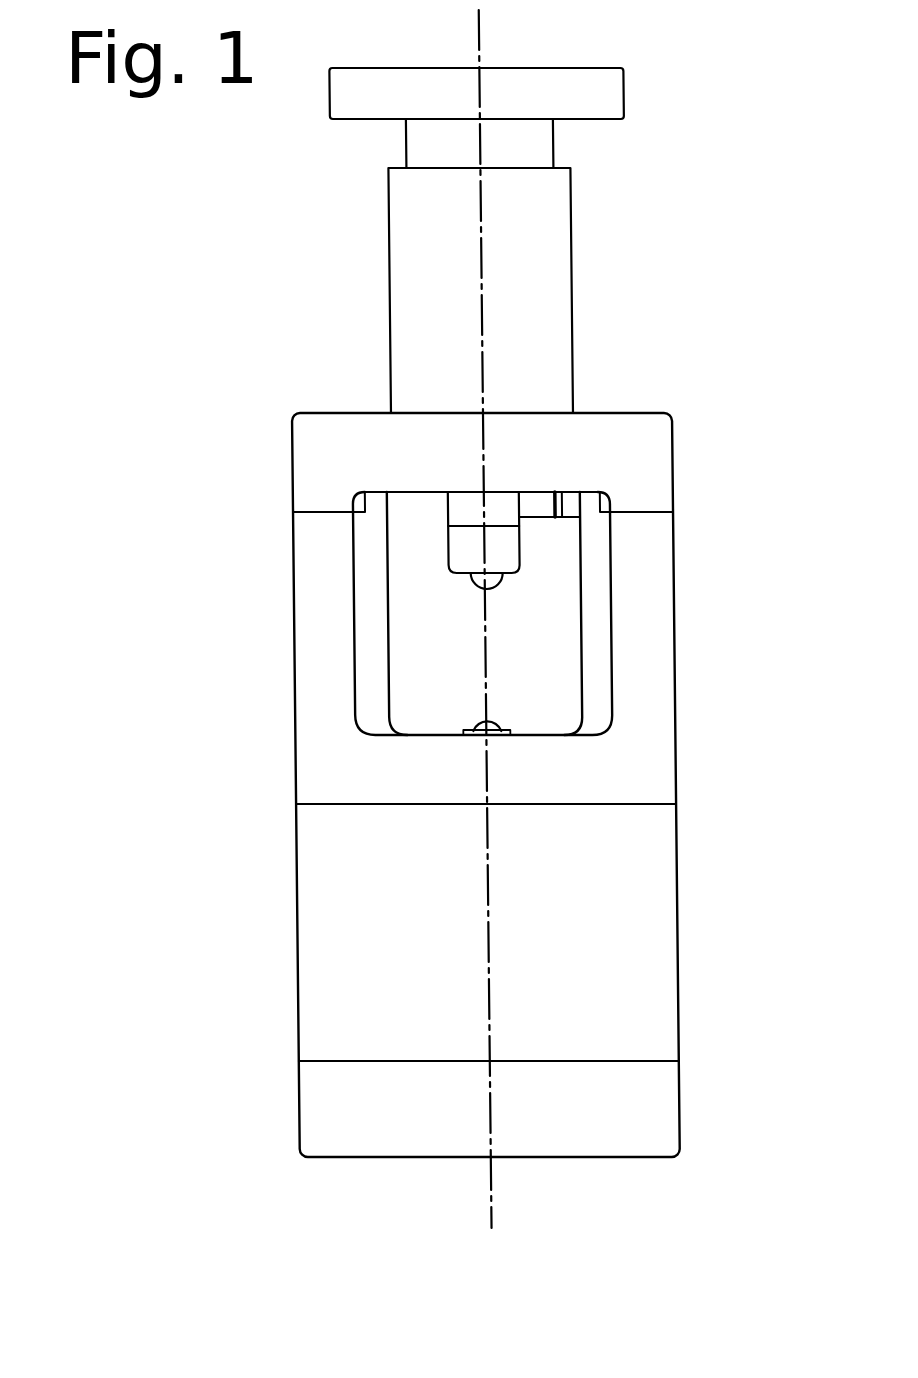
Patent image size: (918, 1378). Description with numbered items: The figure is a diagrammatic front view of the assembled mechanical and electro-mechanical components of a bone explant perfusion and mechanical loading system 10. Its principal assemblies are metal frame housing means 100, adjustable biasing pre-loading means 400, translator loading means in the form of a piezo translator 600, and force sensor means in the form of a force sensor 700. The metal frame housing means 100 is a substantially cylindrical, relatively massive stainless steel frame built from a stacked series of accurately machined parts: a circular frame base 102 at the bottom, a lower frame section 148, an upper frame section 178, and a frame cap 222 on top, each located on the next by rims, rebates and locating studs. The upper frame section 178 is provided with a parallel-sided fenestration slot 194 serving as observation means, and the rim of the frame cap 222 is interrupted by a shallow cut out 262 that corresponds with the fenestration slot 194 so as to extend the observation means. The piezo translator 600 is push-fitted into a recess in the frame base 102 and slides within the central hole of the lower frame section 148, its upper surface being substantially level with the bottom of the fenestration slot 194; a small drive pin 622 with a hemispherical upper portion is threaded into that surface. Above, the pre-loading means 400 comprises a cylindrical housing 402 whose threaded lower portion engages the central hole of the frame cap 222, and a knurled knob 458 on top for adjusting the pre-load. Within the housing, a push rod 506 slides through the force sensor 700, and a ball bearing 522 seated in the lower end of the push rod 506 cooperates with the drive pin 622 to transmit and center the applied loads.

The perfusion and mechanical loading system 10 is at (294, 338).
The metal frame housing means 100 is at (320, 620).
The frame base 102 is at (662, 1084).
The lower frame section 148 is at (643, 886).
The upper frame section 178 is at (655, 693).
The fenestration slot 194 is at (582, 590).
The frame cap 222 is at (548, 453).
The shallow cut out 262 is at (578, 496).
The adjustable biasing pre-loading means 400 is at (415, 285).
The housing 402 is at (537, 353).
The knob 458 is at (595, 93).
The push rod 506 is at (497, 543).
The ball bearing 522 is at (521, 573).
The piezo translator 600 is at (466, 734).
The drive pin 622 is at (510, 732).
The force sensor 700 is at (463, 517).